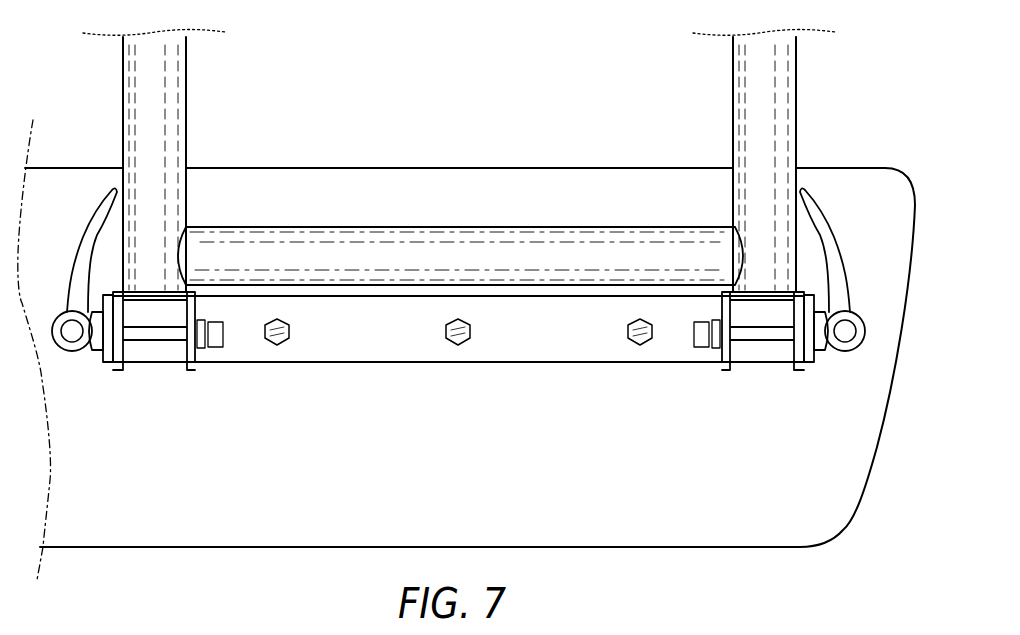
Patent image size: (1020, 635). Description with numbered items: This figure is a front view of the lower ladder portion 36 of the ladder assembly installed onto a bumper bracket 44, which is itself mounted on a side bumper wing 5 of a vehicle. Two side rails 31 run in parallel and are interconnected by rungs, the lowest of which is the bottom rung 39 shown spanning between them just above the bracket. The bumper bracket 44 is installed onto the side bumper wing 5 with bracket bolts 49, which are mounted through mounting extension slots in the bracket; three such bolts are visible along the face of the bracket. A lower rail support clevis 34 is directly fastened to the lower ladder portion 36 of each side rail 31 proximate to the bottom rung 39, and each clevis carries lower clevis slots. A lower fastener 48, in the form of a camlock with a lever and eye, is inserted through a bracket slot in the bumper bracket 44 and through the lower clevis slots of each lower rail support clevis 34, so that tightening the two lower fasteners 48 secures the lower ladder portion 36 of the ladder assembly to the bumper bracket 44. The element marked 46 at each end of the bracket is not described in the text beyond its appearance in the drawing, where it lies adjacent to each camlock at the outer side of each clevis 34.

The side bumper wing 5 is at (827, 507).
The side rail 31 is at (138, 72).
The lower rail support clevis 34 is at (117, 367).
The lower ladder portion 36 is at (785, 62).
The bottom rung 39 is at (292, 237).
The bumper bracket 44 is at (243, 362).
The clamp 46 is at (110, 352).
The lower fastener 48 is at (70, 305).
The bracket bolt 49 is at (635, 340).